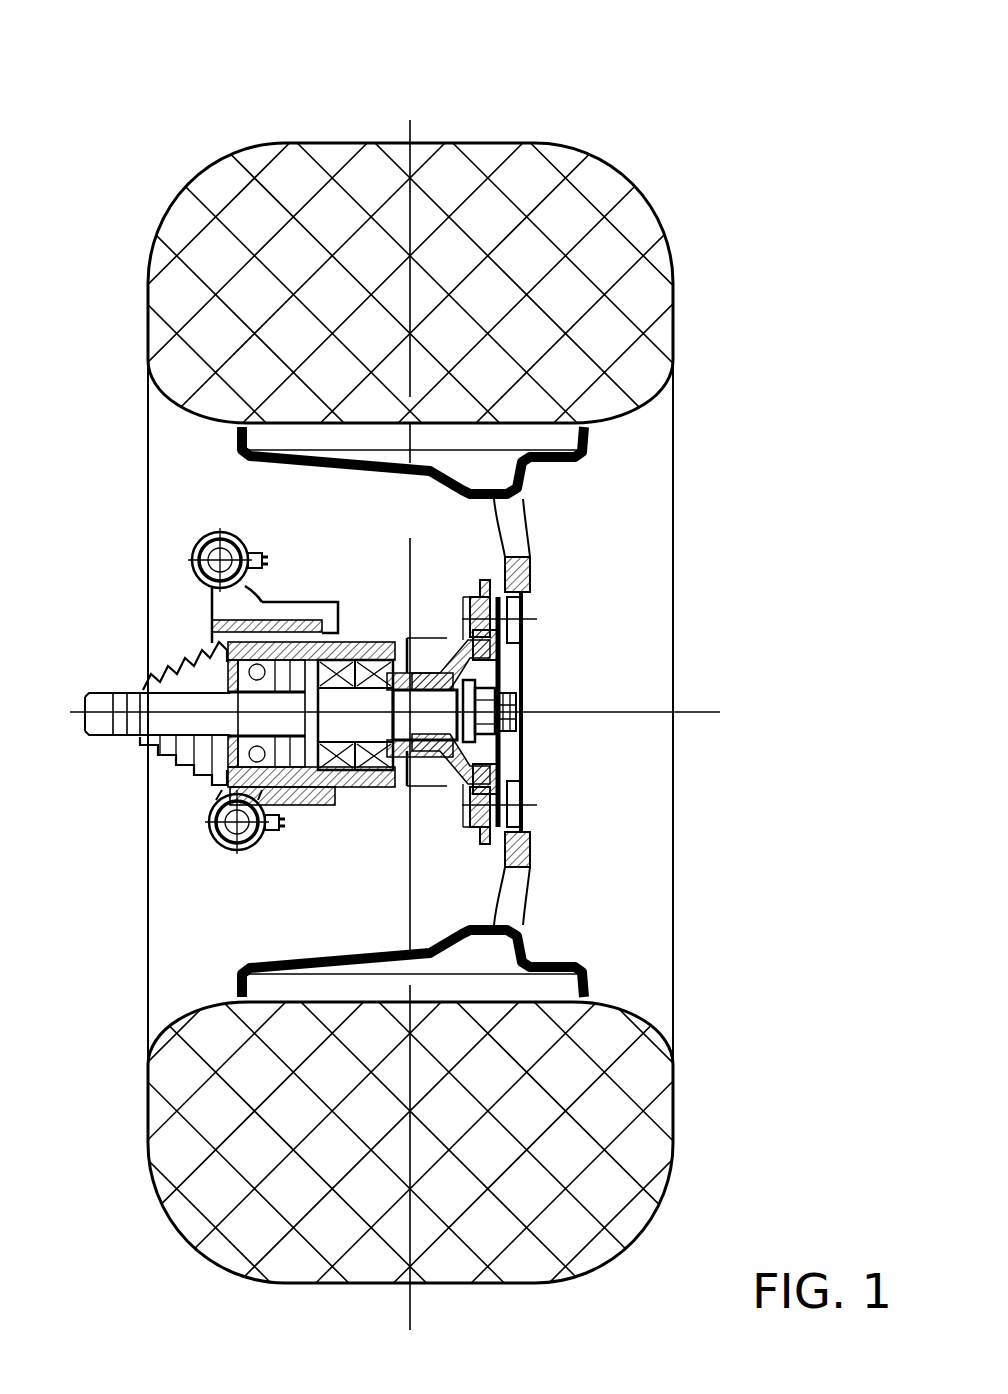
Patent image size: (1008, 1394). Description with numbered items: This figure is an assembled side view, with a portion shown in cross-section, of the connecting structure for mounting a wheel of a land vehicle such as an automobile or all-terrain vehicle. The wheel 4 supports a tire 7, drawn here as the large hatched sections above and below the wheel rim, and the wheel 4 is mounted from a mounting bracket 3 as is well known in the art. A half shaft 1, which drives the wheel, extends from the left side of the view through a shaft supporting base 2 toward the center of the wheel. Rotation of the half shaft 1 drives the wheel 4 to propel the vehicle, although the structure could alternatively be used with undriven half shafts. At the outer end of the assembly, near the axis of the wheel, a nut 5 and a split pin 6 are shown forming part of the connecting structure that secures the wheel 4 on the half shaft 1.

The half shaft 1 is at (103, 707).
The shaft supporting base 2 is at (360, 640).
The mounting bracket of the wheel 3 is at (480, 583).
The wheel 4 is at (533, 577).
The nut 5 is at (480, 693).
The split pin 6 is at (522, 707).
The tire 7 is at (488, 162).